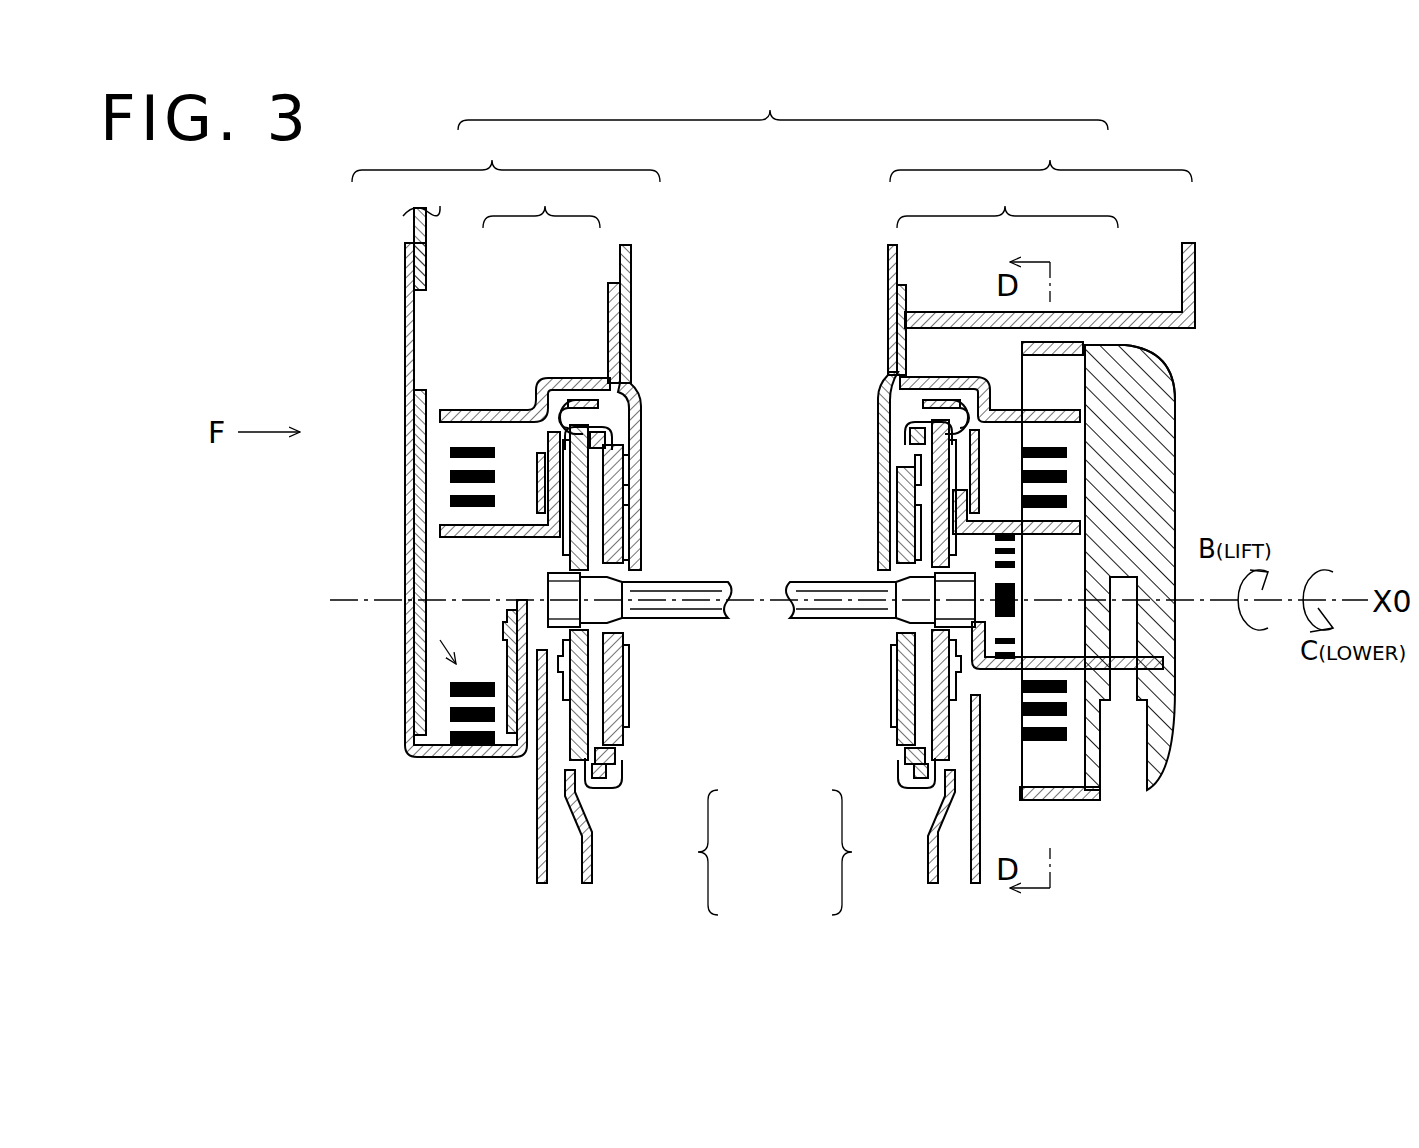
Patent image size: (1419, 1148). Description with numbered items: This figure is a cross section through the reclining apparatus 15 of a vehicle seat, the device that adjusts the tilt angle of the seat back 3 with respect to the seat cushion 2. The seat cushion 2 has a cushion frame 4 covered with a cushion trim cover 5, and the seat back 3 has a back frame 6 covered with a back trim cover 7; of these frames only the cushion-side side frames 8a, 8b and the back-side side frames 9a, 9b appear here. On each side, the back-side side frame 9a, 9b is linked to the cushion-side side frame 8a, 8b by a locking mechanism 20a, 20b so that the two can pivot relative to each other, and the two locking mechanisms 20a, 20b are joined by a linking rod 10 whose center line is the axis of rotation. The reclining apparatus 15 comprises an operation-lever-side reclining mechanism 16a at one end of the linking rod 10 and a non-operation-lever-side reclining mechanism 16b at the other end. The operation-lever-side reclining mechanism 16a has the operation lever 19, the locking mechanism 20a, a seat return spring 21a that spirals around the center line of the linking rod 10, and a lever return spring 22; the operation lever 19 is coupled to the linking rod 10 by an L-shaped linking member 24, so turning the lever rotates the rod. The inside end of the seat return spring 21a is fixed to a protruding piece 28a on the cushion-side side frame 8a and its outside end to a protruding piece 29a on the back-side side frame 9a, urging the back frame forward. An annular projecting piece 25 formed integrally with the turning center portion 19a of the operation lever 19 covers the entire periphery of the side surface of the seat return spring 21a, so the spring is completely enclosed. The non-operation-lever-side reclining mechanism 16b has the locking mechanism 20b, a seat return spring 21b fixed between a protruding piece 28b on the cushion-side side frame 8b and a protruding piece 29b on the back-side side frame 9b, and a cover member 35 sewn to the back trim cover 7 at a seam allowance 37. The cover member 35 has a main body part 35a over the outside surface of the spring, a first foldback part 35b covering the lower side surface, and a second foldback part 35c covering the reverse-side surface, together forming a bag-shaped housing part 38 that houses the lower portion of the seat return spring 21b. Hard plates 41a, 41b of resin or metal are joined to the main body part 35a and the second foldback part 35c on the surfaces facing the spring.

The seat cushion 2 is at (775, 852).
The seat back 3 is at (800, 202).
The cushion frame 4 is at (733, 624).
The cushion trim cover 5 is at (539, 468).
The back frame 6 is at (720, 314).
The back trim cover 7 is at (430, 223).
The cushion-side side frame 8a is at (948, 402).
The cushion-side side frame 8b is at (576, 402).
The back-side side frame 9a is at (895, 256).
The back-side side frame 9b is at (624, 250).
The linking rod 10 is at (816, 580).
The reclining apparatus 15 is at (783, 104).
The operation-lever-side reclining mechanism 16a is at (1041, 154).
The non-operation-lever-side reclining mechanism 16b is at (506, 153).
The operation lever 19 is at (1150, 390).
The turning center portion 19a is at (1150, 390).
The locking mechanism 20a is at (886, 516).
The locking mechanism 20b is at (632, 516).
The seat return spring 21a is at (1068, 476).
The seat return spring 21b is at (452, 456).
The lever return spring 22 is at (1010, 582).
The linking member 24 is at (1046, 666).
The projecting piece 25 is at (1052, 344).
The protruding piece 28a is at (1078, 528).
The protruding piece 28b is at (452, 526).
The protruding piece 29a is at (1047, 412).
The protruding piece 29b is at (462, 410).
The cover member 35 is at (235, 555).
The main body part 35a is at (405, 565).
The first foldback part 35b is at (463, 758).
The second foldback part 35c is at (527, 712).
The seam allowance 37 is at (385, 243).
The housing part 38 is at (405, 650).
The plate 41a is at (422, 584).
The plate 41b is at (510, 638).